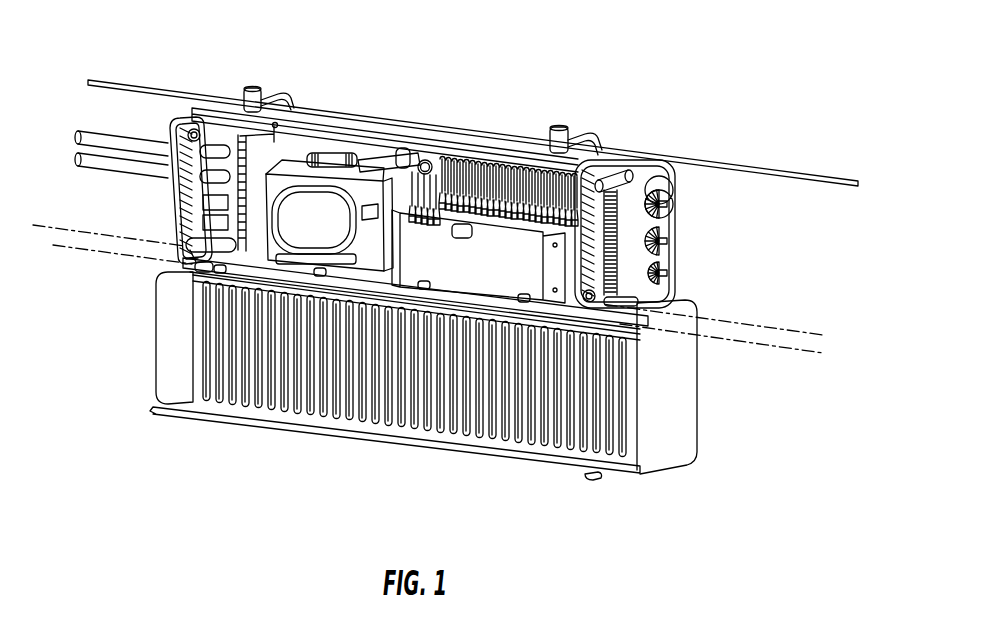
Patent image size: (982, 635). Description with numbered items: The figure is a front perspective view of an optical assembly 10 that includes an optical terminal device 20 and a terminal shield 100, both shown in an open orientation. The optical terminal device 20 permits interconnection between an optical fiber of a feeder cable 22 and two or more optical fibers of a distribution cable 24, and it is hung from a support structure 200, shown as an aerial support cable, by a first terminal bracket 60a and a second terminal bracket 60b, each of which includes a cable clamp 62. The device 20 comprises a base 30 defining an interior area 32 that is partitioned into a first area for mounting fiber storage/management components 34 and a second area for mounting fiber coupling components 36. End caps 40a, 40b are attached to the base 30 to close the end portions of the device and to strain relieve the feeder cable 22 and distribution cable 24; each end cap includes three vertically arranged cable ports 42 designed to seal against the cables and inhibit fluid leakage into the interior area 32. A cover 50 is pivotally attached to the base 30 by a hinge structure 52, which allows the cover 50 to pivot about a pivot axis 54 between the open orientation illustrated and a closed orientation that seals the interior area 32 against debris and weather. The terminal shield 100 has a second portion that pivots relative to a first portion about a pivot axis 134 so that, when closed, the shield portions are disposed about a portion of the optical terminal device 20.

The optical assembly 10 is at (440, 187).
The optical terminal device 20 is at (380, 128).
The feeder cable 22 is at (105, 132).
The distribution cable 24 is at (100, 163).
The base 30 is at (336, 152).
The interior area 32 is at (297, 148).
The fiber storage/management components 34 is at (363, 160).
The fiber coupling components 36 is at (488, 160).
The end cap 40a is at (167, 186).
The end cap 40b is at (668, 234).
The cable ports 42 is at (663, 243).
The cover 50 is at (222, 426).
The hinge structure 52 is at (219, 302).
The pivot axis 54 is at (782, 348).
The first terminal bracket 60a is at (277, 93).
The second terminal bracket 60b is at (583, 138).
The cable clamp 62 is at (537, 128).
The terminal shield 100 is at (468, 365).
The pivot axis 134 is at (785, 330).
The support structure 200 is at (717, 165).